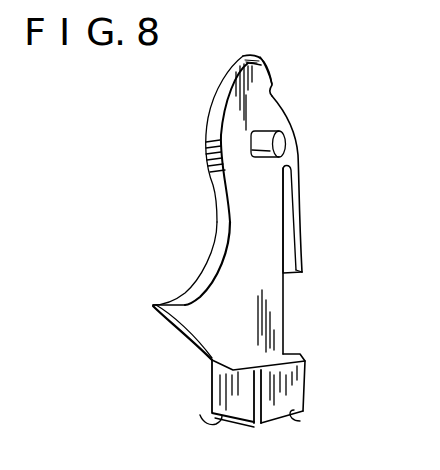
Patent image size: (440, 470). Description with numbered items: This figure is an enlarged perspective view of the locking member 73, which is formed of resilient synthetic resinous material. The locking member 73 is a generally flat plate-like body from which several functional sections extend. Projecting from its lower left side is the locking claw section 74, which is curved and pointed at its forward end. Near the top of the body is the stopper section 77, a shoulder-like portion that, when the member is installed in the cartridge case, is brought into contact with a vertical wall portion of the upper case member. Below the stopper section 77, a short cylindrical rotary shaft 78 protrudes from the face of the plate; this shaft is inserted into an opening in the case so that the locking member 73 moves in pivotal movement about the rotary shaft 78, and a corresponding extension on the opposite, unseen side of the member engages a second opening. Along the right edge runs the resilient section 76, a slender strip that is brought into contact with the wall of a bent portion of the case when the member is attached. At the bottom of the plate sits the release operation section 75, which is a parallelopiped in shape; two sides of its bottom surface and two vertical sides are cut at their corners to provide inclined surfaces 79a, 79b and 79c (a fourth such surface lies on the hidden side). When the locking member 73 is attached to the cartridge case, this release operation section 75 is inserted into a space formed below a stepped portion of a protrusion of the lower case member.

The locking member 73 is at (270, 312).
The locking claw section 74 is at (157, 306).
The release operation section 75 is at (295, 378).
The resilient section 76 is at (302, 244).
The stopper section 77 is at (273, 90).
The rotary shaft 78 is at (286, 144).
The inclined surface 79a is at (200, 415).
The inclined surface 79b is at (300, 421).
The inclined surface 79c is at (254, 386).